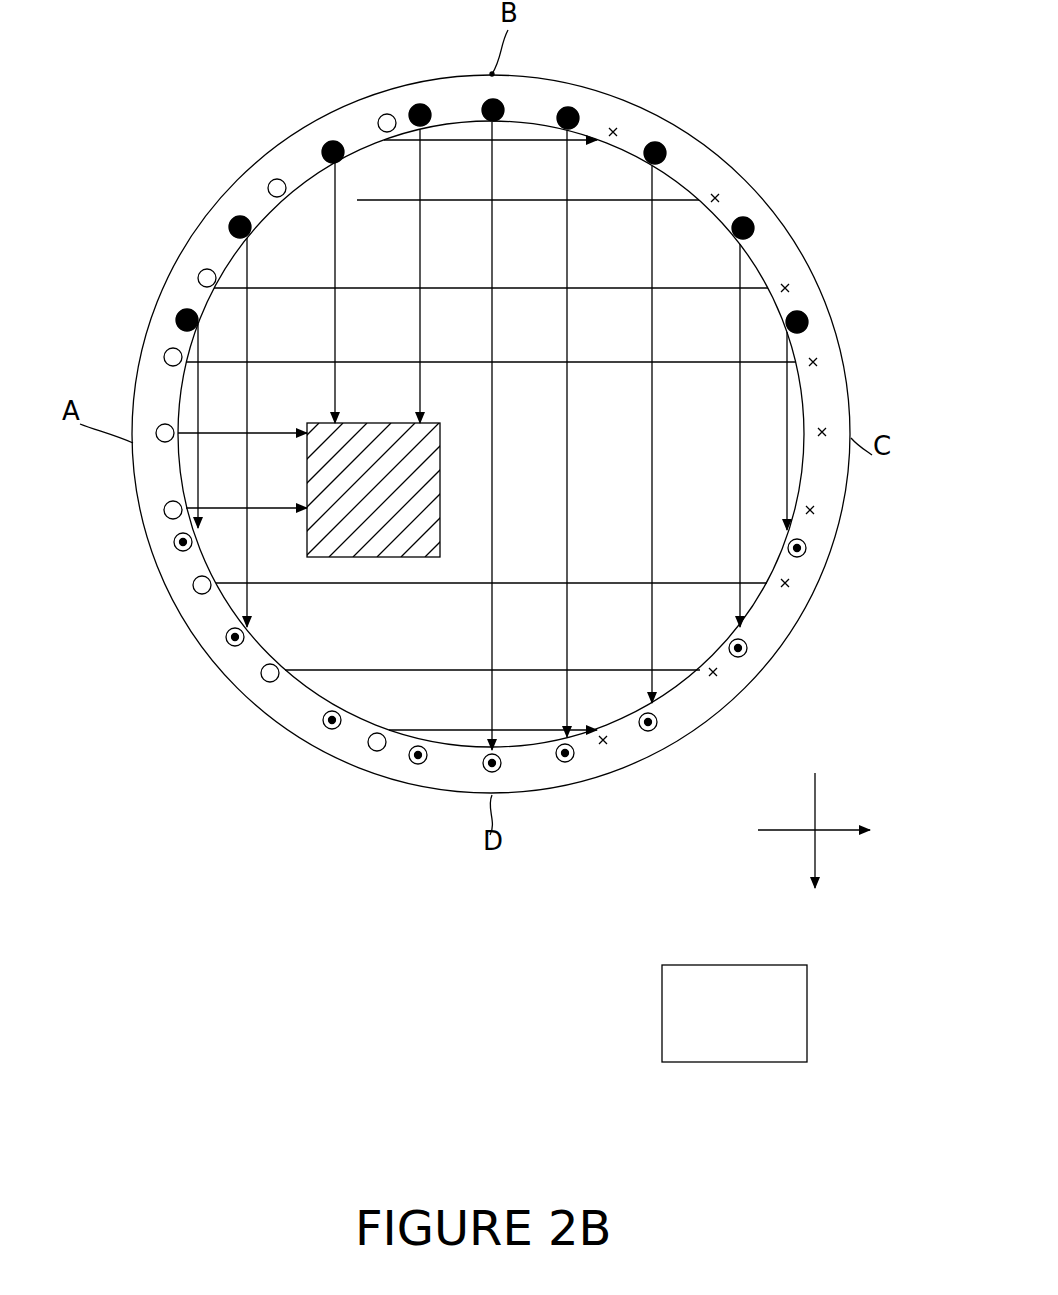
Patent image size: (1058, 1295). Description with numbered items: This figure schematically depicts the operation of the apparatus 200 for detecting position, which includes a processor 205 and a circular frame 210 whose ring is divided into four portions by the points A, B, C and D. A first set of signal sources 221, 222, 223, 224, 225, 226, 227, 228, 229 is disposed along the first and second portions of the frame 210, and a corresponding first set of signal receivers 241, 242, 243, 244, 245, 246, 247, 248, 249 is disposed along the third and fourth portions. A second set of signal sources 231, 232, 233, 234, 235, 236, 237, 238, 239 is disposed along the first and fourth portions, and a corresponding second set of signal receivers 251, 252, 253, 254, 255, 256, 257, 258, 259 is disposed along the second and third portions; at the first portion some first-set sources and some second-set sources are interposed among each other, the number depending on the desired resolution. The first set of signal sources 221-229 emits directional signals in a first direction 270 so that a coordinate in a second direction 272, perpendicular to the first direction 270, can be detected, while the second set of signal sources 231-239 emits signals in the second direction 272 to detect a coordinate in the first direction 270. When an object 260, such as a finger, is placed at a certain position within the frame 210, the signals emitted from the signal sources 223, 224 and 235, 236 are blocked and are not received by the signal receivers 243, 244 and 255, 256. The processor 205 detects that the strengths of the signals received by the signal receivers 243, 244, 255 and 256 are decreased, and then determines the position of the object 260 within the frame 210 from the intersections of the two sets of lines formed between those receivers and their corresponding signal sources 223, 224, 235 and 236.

The apparatus for detecting position 200 is at (262, 981).
The processor 205 is at (713, 1063).
The circular frame 210 is at (718, 172).
The signal source of first set 221 is at (185, 310).
The signal source of first set 222 is at (240, 218).
The signal source of first set 223 is at (333, 142).
The signal source of first set 224 is at (420, 104).
The signal source of first set 225 is at (497, 100).
The signal source of first set 226 is at (575, 108).
The signal source of first set 227 is at (660, 145).
The signal source of first set 228 is at (752, 222).
The signal source of first set 229 is at (805, 318).
The signal source of second set 231 is at (387, 116).
The signal source of second set 232 is at (277, 180).
The signal source of second set 233 is at (205, 270).
The signal source of second set 234 is at (166, 357).
The signal source of second set 235 is at (158, 437).
The signal source of second set 236 is at (166, 516).
The signal source of second set 237 is at (195, 590).
The signal source of second set 238 is at (264, 680).
The signal source of second set 239 is at (375, 752).
The signal receiver of first set 241 is at (176, 547).
The signal receiver of first set 242 is at (228, 642).
The signal receiver of first set 243 is at (326, 728).
The signal receiver of first set 244 is at (416, 765).
The signal receiver of first set 245 is at (488, 773).
The signal receiver of first set 246 is at (567, 763).
The signal receiver of first set 247 is at (658, 726).
The signal receiver of first set 248 is at (748, 650).
The signal receiver of first set 249 is at (808, 548).
The signal receiver of second set 251 is at (616, 128).
The signal receiver of second set 252 is at (720, 195).
The signal receiver of second set 253 is at (792, 286).
The signal receiver of second set 254 is at (820, 360).
The signal receiver of second set 255 is at (828, 430).
The signal receiver of second set 256 is at (817, 510).
The signal receiver of second set 257 is at (792, 585).
The signal receiver of second set 258 is at (720, 673).
The signal receiver of second set 259 is at (606, 747).
The object 260 is at (360, 559).
The first direction 270 is at (815, 844).
The second direction 272 is at (843, 833).